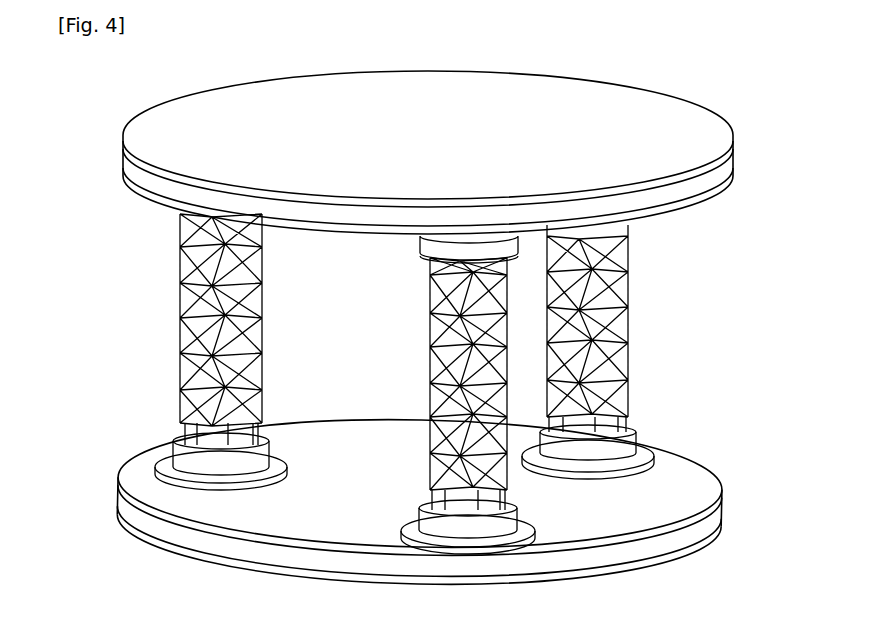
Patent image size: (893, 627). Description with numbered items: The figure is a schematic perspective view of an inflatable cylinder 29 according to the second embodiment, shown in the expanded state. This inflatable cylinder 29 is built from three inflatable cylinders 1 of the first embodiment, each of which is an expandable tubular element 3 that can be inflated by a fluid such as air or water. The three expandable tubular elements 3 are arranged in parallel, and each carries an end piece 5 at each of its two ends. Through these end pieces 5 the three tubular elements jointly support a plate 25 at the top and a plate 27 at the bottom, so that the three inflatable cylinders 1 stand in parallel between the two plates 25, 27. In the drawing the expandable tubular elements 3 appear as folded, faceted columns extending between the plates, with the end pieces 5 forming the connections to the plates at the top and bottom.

The inflatable cylinder 1 is at (267, 305).
The expandable tubular element 3 is at (267, 427).
The end piece 5 is at (495, 241).
The plate 25 is at (528, 134).
The plate 27 is at (647, 507).
The inflatable cylinder 29 is at (130, 325).